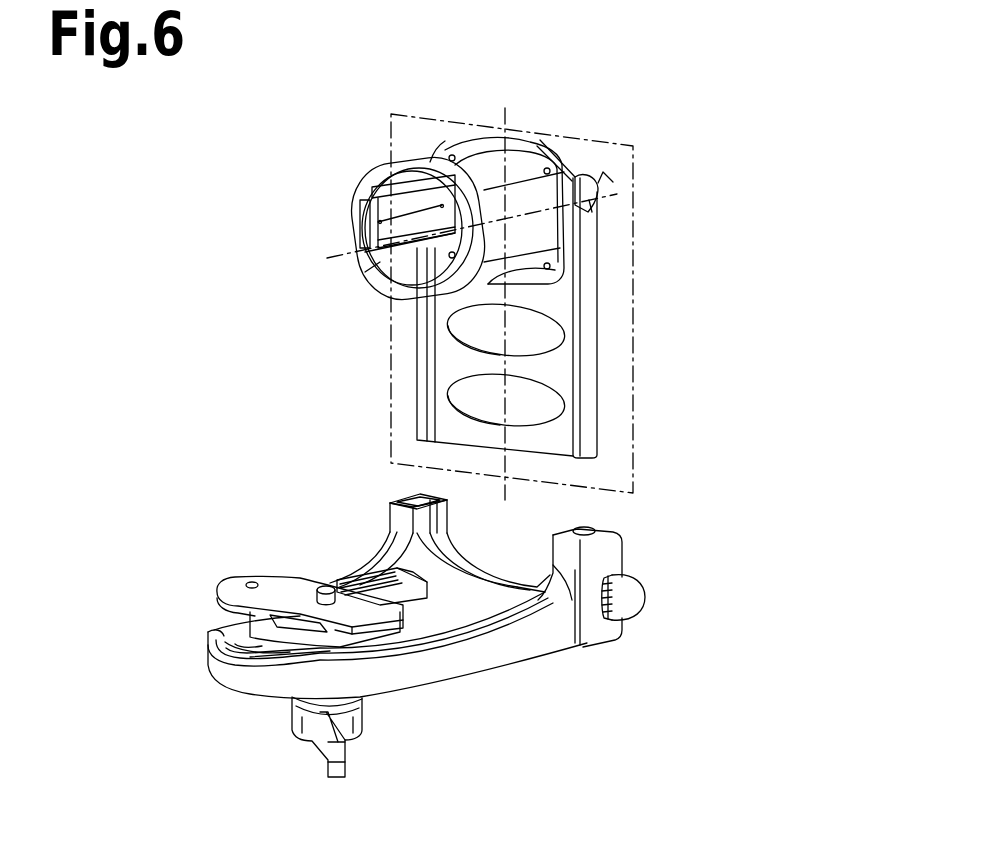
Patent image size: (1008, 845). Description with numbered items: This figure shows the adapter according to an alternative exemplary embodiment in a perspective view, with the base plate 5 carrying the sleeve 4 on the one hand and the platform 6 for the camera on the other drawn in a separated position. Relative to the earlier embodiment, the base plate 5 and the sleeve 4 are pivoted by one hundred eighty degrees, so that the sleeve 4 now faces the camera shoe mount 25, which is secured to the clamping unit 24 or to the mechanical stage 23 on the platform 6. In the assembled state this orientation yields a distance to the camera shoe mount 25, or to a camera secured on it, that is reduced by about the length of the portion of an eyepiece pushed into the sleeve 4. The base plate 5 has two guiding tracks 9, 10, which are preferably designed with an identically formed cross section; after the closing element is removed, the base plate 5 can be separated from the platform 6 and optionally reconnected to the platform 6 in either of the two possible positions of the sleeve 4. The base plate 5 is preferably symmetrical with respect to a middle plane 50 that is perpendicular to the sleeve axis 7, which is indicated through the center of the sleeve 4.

The sleeve 4 is at (351, 162).
The base plate 5 is at (656, 352).
The platform 6 is at (533, 664).
The sleeve axis 7 is at (338, 256).
The guiding track 9 is at (605, 261).
The guiding track 10 is at (406, 337).
The mechanical stage 23 is at (288, 645).
The clamping unit 24 is at (270, 631).
The camera shoe mount 25 is at (248, 570).
The middle plane 50 is at (613, 182).